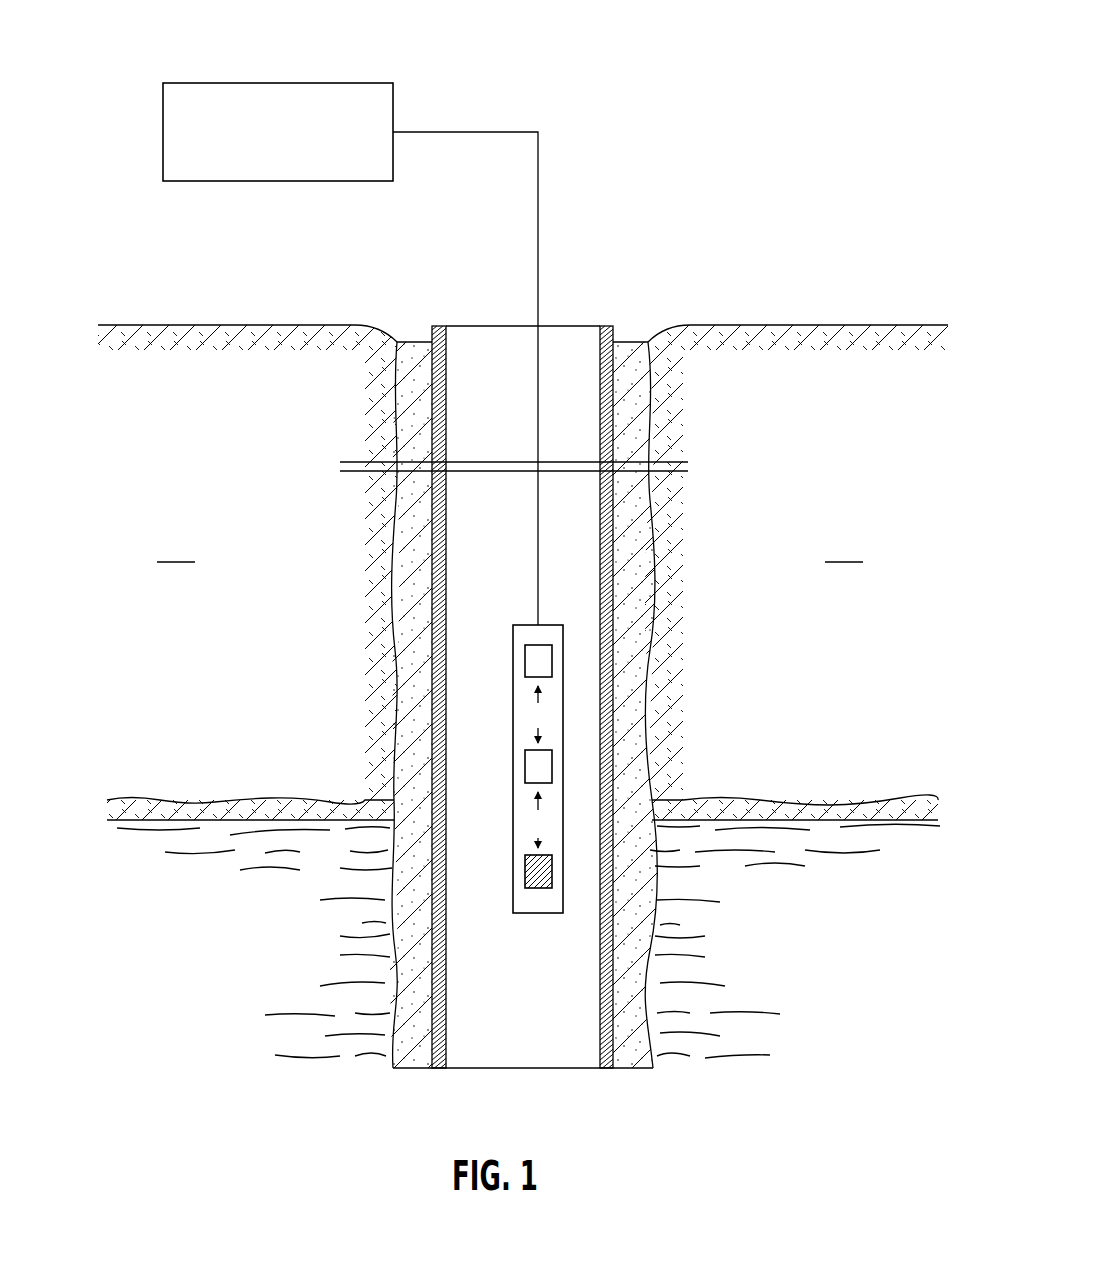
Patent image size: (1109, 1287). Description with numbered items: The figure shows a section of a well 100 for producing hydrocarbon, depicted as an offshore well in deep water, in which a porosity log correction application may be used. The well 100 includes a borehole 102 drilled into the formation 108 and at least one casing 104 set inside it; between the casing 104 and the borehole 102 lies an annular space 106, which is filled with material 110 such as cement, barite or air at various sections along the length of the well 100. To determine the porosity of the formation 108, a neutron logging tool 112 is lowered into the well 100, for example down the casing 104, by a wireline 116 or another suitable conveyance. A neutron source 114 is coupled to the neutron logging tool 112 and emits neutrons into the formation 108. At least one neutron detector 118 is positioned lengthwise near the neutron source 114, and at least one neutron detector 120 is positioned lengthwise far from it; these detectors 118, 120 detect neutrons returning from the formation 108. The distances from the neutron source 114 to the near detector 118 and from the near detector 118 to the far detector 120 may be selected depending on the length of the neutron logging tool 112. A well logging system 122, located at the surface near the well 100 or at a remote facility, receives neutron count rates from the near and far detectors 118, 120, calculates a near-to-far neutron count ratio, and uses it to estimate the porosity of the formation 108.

The well 100 is at (773, 147).
The borehole 102 is at (656, 744).
The casing 104 is at (620, 400).
The annular space 106 is at (651, 313).
The formation 108 is at (523, 572).
The material 110 is at (628, 530).
The neutron logging tool 112 is at (548, 635).
The neutron source 114 is at (525, 870).
The wireline 116 is at (540, 170).
The neutron detector 118 is at (525, 765).
The neutron detector 120 is at (525, 650).
The well logging system 122 is at (207, 83).